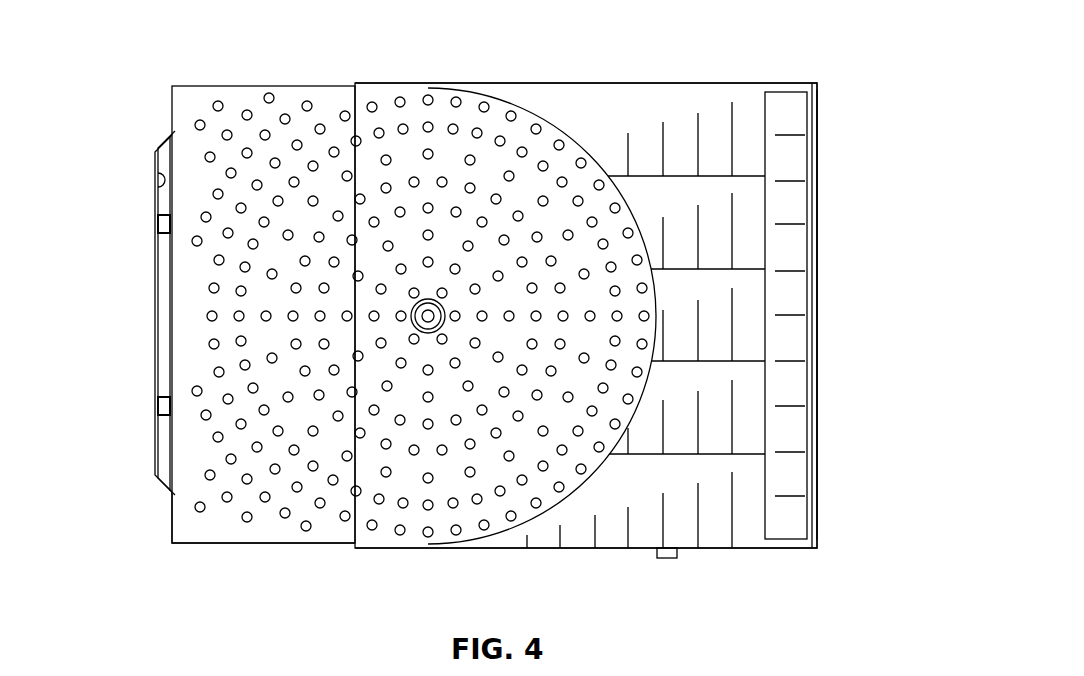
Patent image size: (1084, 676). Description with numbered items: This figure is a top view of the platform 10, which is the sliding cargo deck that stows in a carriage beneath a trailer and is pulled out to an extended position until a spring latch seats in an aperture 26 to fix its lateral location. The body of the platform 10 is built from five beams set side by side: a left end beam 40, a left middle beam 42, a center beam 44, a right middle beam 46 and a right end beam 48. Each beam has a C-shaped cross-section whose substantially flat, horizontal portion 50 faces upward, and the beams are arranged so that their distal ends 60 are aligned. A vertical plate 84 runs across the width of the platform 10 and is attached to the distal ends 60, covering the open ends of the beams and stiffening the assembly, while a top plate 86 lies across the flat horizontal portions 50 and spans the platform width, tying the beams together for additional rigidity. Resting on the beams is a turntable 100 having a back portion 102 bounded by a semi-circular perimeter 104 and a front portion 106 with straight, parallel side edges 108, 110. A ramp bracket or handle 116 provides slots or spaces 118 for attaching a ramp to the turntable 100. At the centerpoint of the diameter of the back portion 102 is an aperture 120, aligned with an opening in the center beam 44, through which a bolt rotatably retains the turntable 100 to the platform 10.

The platform 10 is at (835, 246).
The aperture 26 is at (650, 556).
The left end beam 40 is at (702, 290).
The left middle beam 42 is at (753, 208).
The center beam 44 is at (753, 308).
The right middle beam 46 is at (753, 403).
The right end beam 48 is at (753, 489).
The substantially flat, horizontal portion 50 is at (565, 95).
The distal end 60 is at (820, 233).
The vertical plate 84 is at (820, 337).
The top plate 86 is at (800, 158).
The turntable 100 is at (381, 321).
The back portion 102 is at (484, 102).
The semi-circular perimeter 104 is at (597, 463).
The front portion 106 is at (190, 507).
The side edge 108 is at (248, 98).
The side edge 110 is at (197, 533).
The ramp bracket or handle 116 is at (156, 273).
The slots or spaces 118 is at (160, 188).
The aperture 120 is at (428, 333).